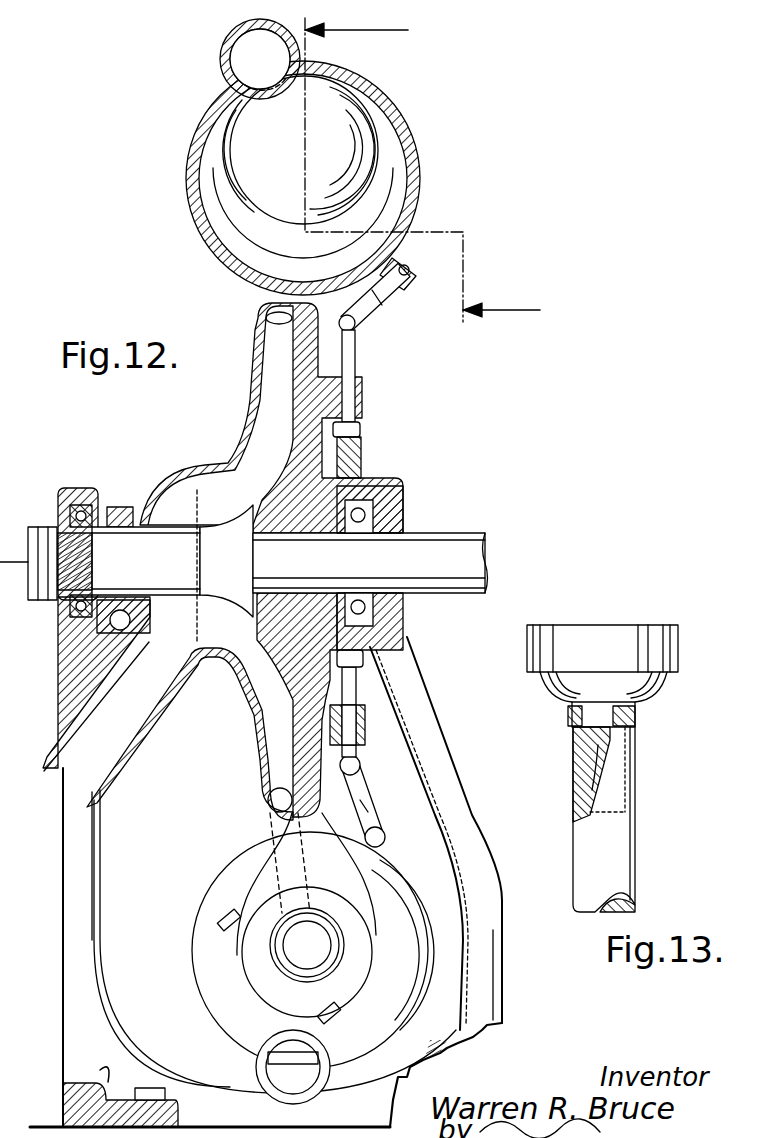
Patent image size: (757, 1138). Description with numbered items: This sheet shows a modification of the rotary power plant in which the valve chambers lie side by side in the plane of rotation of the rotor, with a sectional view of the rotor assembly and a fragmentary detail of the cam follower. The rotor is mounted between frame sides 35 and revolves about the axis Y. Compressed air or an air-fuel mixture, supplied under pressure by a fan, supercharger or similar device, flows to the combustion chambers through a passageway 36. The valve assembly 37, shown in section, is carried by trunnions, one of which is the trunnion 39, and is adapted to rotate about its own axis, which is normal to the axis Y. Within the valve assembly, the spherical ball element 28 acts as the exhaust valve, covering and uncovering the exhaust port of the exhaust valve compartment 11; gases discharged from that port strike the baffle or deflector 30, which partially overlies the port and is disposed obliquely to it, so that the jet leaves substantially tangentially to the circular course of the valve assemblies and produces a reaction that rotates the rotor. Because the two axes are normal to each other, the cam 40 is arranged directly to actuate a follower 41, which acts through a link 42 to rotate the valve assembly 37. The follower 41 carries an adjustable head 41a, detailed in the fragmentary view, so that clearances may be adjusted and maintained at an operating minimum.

In FIG. 12, the exhaust valve compartment 11 is at (436, 170).
In FIG. 12, the spherical ball element 28 is at (245, 128).
In FIG. 12, the baffle or deflector 30 is at (229, 60).
In FIG. 12, the frame sides 35 is at (63, 1010).
In FIG. 12, the passageway 36 is at (262, 368).
In FIG. 12, the valve assembly 37 is at (410, 128).
In FIG. 12, the trunnion 39 is at (300, 948).
In FIG. 12, the cam 40 is at (363, 442).
In FIG. 12, the follower 41 is at (355, 372).
In FIG. 13, the follower 41 is at (622, 830).
In FIG. 12, the adjustable head 41a is at (358, 428).
In FIG. 13, the adjustable head 41a is at (579, 634).
In FIG. 12, the link 42 is at (370, 312).
In FIG. 12, the axis Y is at (485, 560).